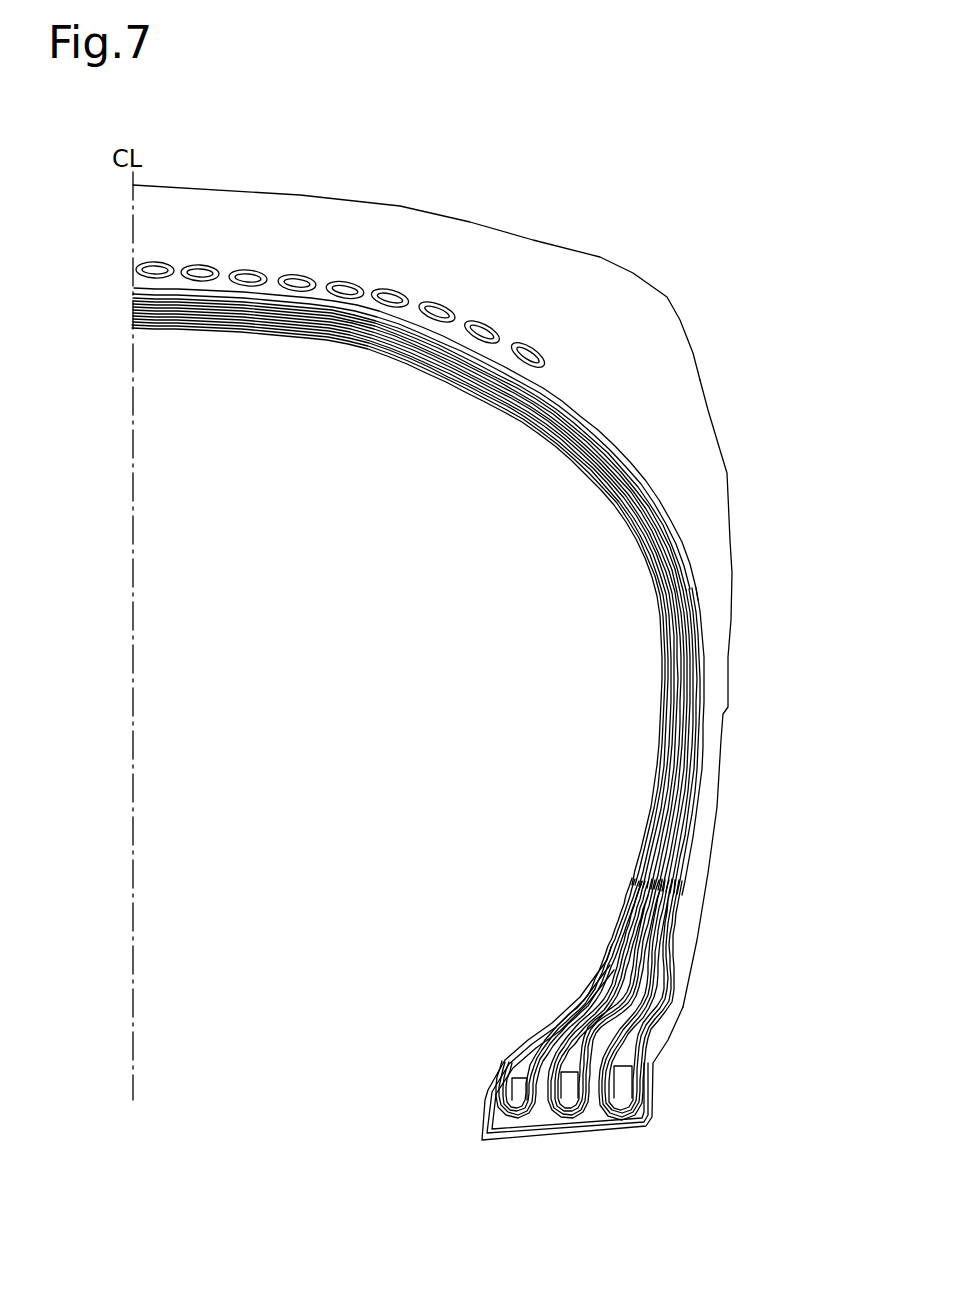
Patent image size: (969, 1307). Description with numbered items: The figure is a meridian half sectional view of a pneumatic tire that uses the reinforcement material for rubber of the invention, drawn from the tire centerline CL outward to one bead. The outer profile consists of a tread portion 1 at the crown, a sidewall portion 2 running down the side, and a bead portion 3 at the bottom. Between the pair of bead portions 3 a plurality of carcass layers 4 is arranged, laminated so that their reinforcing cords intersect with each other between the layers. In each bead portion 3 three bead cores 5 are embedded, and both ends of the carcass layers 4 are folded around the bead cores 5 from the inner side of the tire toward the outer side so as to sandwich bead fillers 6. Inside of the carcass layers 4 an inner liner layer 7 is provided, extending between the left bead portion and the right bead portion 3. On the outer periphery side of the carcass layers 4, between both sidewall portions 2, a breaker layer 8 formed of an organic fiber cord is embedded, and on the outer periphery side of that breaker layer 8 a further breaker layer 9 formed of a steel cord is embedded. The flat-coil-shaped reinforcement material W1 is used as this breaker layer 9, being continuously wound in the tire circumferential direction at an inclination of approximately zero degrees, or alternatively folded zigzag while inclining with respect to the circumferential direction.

The tread portion 1 is at (374, 197).
The sidewall portion 2 is at (729, 537).
The bead portion 3 is at (655, 1067).
The carcass layers 4 is at (700, 651).
The bead cores 5 is at (520, 1103).
The bead fillers 6 is at (626, 1047).
The inner liner layer 7 is at (570, 457).
The breaker layer 8 is at (634, 468).
The breaker layer 9 is at (447, 304).
The reinforcement material W1 is at (493, 322).